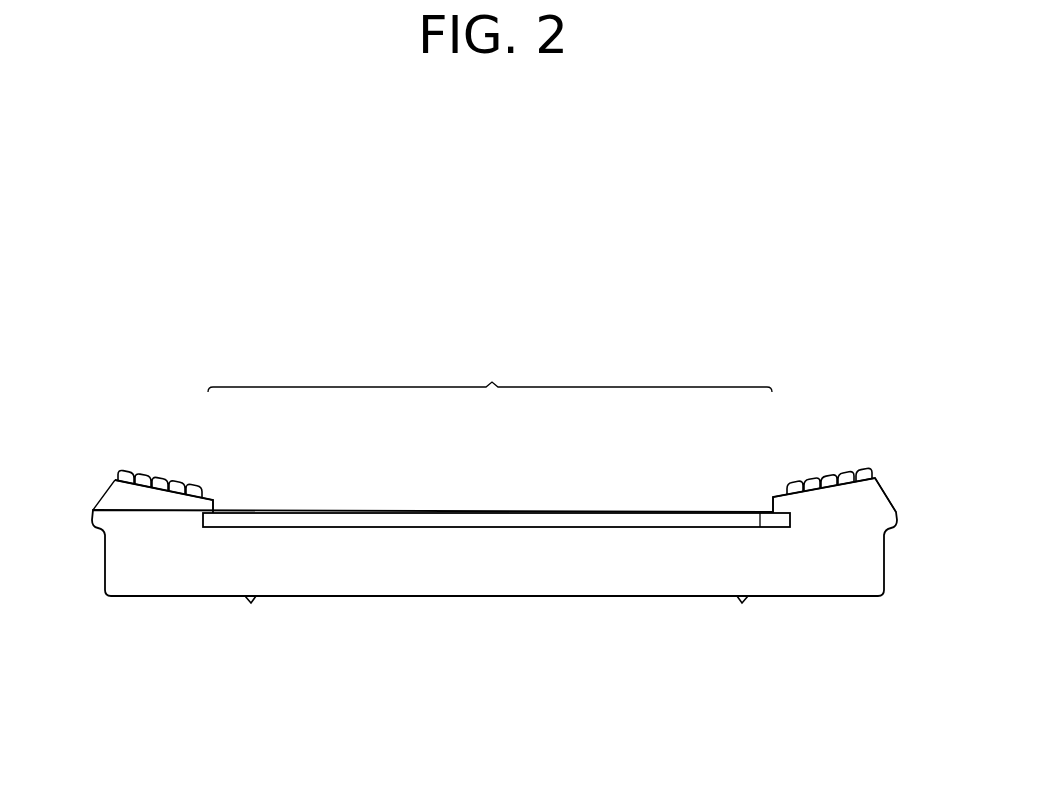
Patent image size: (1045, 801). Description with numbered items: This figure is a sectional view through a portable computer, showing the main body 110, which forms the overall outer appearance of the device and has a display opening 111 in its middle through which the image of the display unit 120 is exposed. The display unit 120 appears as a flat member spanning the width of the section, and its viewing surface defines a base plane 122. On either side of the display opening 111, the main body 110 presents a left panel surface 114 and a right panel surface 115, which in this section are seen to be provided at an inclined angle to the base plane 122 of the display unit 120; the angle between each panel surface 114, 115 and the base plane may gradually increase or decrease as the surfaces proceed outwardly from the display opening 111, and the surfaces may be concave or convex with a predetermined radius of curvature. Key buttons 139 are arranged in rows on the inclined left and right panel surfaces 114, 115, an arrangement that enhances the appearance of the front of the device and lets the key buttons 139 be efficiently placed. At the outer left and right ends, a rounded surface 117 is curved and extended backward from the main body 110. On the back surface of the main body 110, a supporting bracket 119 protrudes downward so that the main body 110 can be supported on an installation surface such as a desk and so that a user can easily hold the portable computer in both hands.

The main body 110 is at (490, 375).
The display opening 111 is at (218, 498).
The left panel surface 114 is at (187, 481).
The right panel surface 115 is at (792, 481).
The rounded surface 117 is at (98, 500).
The supporting bracket 119 is at (251, 604).
The display unit 120 is at (213, 528).
The base plane 122 is at (760, 516).
The key buttons 139 is at (141, 472).